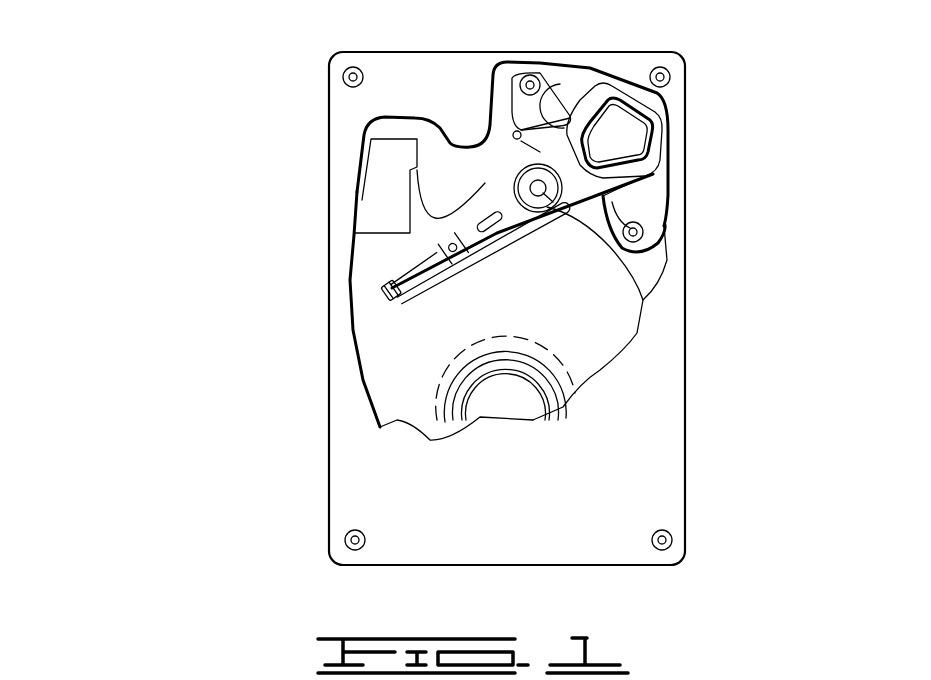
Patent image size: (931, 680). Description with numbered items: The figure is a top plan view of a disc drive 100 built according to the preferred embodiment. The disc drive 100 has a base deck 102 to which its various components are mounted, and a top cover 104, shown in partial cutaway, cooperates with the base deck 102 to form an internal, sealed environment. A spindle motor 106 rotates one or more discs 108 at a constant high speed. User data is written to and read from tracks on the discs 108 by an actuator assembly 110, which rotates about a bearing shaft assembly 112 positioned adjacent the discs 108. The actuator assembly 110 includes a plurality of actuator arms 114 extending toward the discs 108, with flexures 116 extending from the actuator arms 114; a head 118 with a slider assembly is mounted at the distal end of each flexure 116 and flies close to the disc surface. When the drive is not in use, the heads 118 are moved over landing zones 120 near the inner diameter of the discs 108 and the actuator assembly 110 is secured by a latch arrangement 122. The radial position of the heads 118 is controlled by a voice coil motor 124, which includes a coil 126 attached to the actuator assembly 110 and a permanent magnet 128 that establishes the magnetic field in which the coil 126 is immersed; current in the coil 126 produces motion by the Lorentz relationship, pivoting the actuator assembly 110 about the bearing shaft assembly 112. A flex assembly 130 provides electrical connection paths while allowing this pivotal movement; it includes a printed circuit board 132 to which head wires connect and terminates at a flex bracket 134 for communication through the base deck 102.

The disc drive 100 is at (338, 42).
The base deck 102 is at (371, 266).
The top cover 104 is at (380, 458).
The spindle motor 106 is at (499, 386).
The disc 108 is at (613, 330).
The actuator assembly 110 is at (511, 234).
The bearing shaft assembly 112 is at (627, 275).
The actuator arm 114 is at (470, 234).
The flexure 116 is at (413, 283).
The head 118 is at (383, 294).
The landing zone 120 is at (443, 368).
The latch arrangement 122 is at (513, 130).
The voice coil motor 124 is at (579, 92).
The coil 126 is at (655, 134).
The permanent magnet 128 is at (561, 88).
The flex assembly 130 is at (487, 183).
The printed circuit board 132 is at (493, 136).
The flex bracket 134 is at (380, 156).